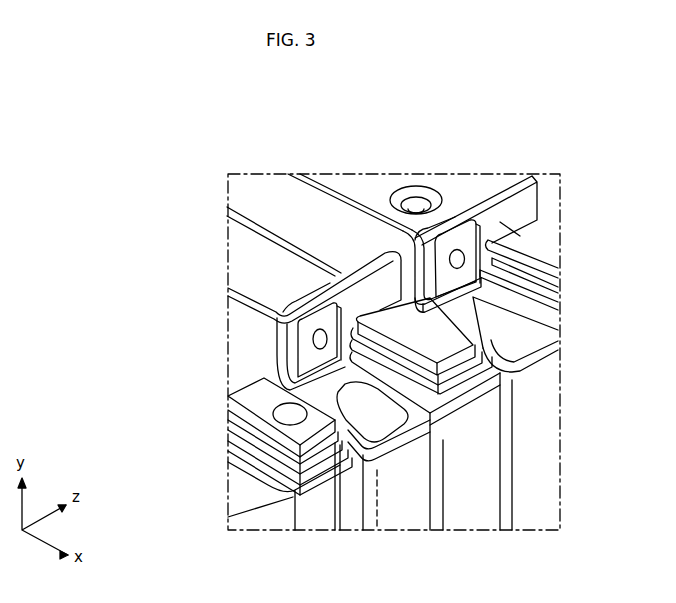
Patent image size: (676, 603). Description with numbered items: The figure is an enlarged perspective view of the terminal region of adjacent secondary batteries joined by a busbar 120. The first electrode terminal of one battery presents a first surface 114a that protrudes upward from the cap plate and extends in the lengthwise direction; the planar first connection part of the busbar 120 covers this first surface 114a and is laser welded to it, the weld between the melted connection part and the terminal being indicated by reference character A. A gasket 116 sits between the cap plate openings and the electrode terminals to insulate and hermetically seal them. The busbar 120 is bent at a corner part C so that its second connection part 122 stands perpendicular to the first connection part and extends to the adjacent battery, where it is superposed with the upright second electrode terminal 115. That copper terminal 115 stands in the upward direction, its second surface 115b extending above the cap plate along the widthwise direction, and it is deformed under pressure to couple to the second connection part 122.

The busbar 120 is at (533, 176).
The second electrode terminal 115 is at (552, 283).
The second surface of the second electrode terminal 115b is at (445, 280).
The gasket 116 is at (462, 383).
The second connection part 122 is at (508, 346).
The first surface of the first electrode terminal 114a is at (326, 440).
The welded coupling region A is at (273, 410).
The corner part C is at (517, 233).